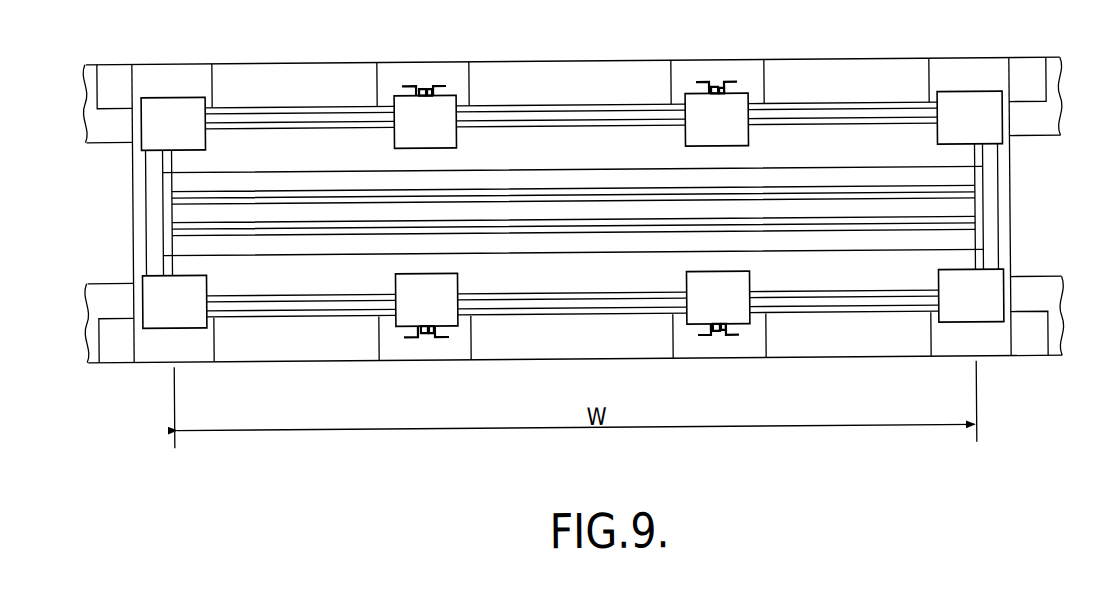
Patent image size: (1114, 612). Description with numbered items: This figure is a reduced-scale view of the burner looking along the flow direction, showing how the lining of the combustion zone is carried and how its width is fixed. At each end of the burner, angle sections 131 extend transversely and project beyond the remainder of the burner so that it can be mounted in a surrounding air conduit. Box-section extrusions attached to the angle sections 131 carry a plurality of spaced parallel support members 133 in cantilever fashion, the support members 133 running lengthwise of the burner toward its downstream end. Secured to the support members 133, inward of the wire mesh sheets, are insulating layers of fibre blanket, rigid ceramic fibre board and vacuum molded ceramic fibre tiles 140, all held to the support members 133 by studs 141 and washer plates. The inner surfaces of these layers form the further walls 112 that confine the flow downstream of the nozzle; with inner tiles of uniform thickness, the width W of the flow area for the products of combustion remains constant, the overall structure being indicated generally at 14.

The frame assembly 14 is at (946, 262).
The further walls 112 is at (559, 177).
The angle sections 131 is at (1037, 121).
The support members 133 is at (440, 84).
The ceramic fibre tiles 140 is at (917, 155).
The studs 141 is at (424, 82).